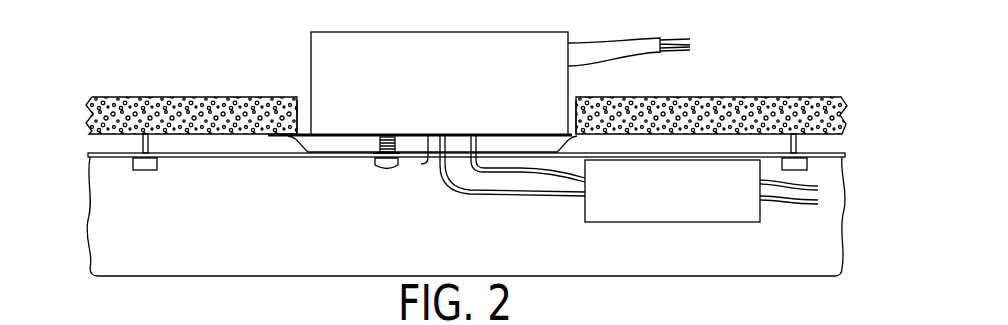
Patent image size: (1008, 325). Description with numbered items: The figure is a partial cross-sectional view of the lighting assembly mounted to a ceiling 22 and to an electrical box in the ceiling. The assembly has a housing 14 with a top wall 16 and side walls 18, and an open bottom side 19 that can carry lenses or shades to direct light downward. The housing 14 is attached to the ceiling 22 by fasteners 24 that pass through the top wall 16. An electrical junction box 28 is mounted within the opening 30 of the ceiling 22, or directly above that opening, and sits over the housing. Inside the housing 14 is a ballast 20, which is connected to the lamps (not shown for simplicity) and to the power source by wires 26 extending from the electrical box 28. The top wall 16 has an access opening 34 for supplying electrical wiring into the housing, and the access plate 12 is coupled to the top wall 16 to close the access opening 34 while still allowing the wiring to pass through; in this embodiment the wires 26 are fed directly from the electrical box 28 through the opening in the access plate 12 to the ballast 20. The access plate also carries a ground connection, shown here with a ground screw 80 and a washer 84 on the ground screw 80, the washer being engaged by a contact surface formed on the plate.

The access plate 12 is at (280, 135).
The housing 14 is at (162, 277).
The top wall 16 is at (200, 158).
The side walls 18 is at (258, 243).
The open bottom side 19 is at (535, 257).
The ballast 20 is at (653, 222).
The ceiling 22 is at (758, 97).
The fasteners 24 is at (145, 172).
The wires 26 is at (513, 197).
The electrical junction box 28 is at (568, 42).
The opening 30 is at (300, 105).
The access opening 34 is at (337, 158).
The ground screw 80 is at (387, 172).
The washer 84 is at (373, 158).